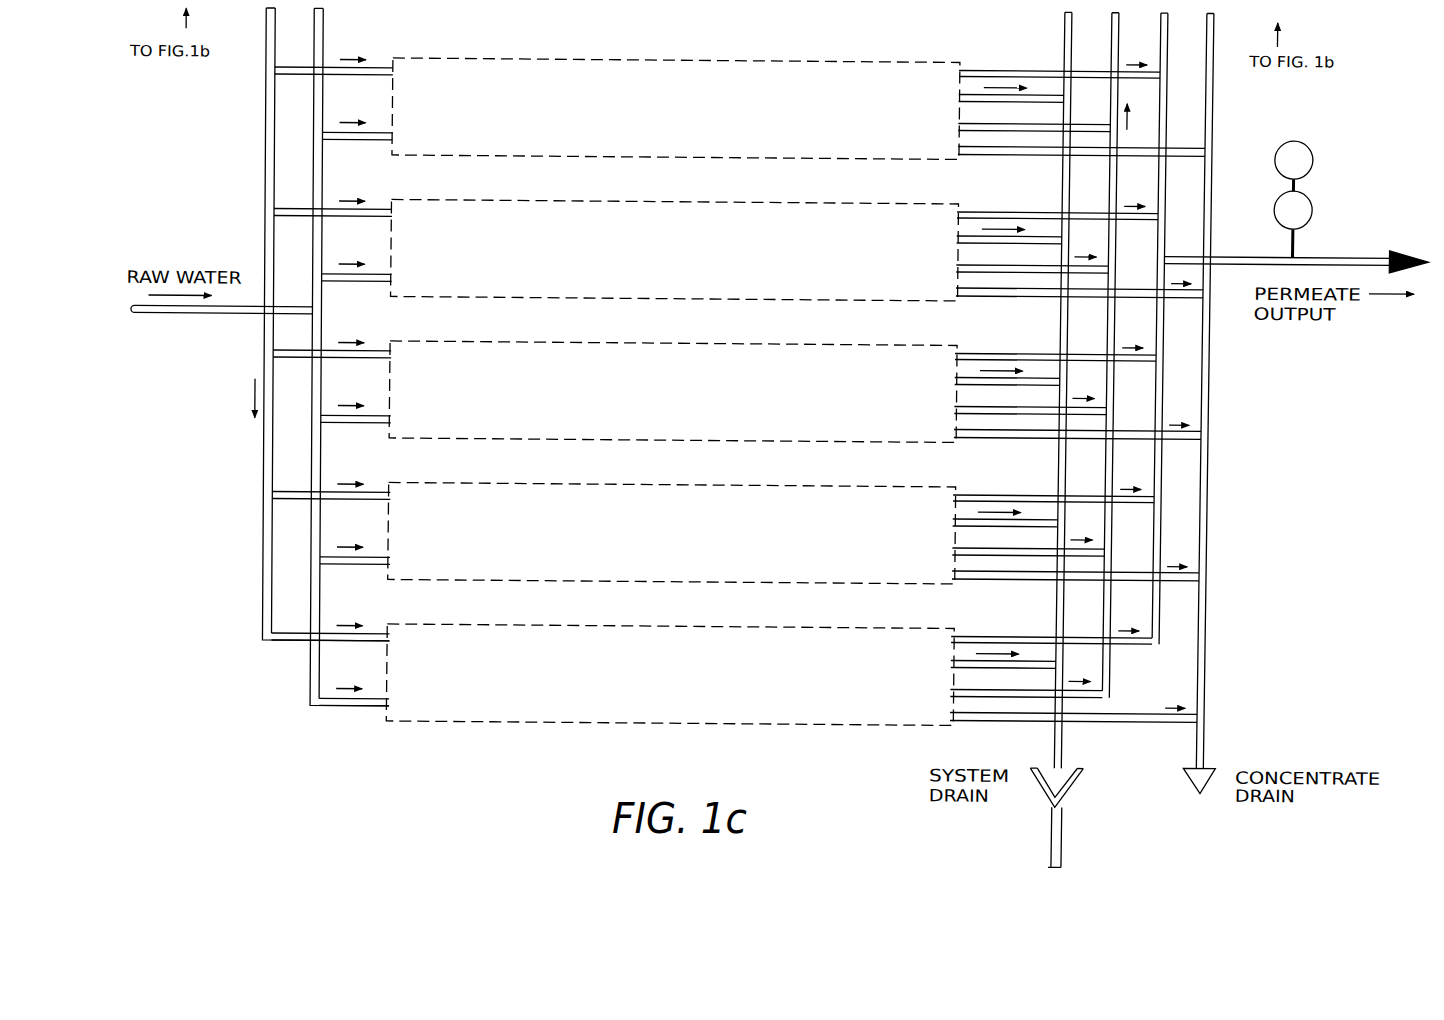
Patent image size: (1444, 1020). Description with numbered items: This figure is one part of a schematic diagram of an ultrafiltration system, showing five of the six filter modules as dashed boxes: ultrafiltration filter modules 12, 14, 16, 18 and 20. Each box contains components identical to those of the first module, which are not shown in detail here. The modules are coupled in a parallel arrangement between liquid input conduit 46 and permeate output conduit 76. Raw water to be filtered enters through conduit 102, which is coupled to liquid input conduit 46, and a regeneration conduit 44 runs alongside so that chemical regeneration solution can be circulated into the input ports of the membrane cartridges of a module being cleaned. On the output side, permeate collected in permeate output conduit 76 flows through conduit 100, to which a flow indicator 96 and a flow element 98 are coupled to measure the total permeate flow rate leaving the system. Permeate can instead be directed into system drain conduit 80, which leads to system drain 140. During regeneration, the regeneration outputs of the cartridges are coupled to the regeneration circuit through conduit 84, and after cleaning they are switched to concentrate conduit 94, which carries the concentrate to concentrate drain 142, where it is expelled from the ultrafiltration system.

The ultrafiltration filter module 12 is at (467, 58).
The ultrafiltration filter module 14 is at (455, 200).
The ultrafiltration filter module 16 is at (455, 341).
The ultrafiltration filter module 18 is at (455, 482).
The ultrafiltration filter module 20 is at (453, 624).
The regeneration conduit 44 is at (266, 18).
The liquid input conduit 46 is at (323, 13).
The permeate output conduit 76 is at (1161, 35).
The system drain conduit 80 is at (1065, 18).
The conduit 84 is at (1112, 32).
The concentrate conduit 94 is at (1207, 35).
The flow indicator 96 is at (1318, 150).
The flow element 98 is at (1315, 200).
The conduit 100 is at (1352, 250).
The conduit 102 is at (200, 316).
The system drain 140 is at (1078, 765).
The concentrate drain 142 is at (1230, 765).